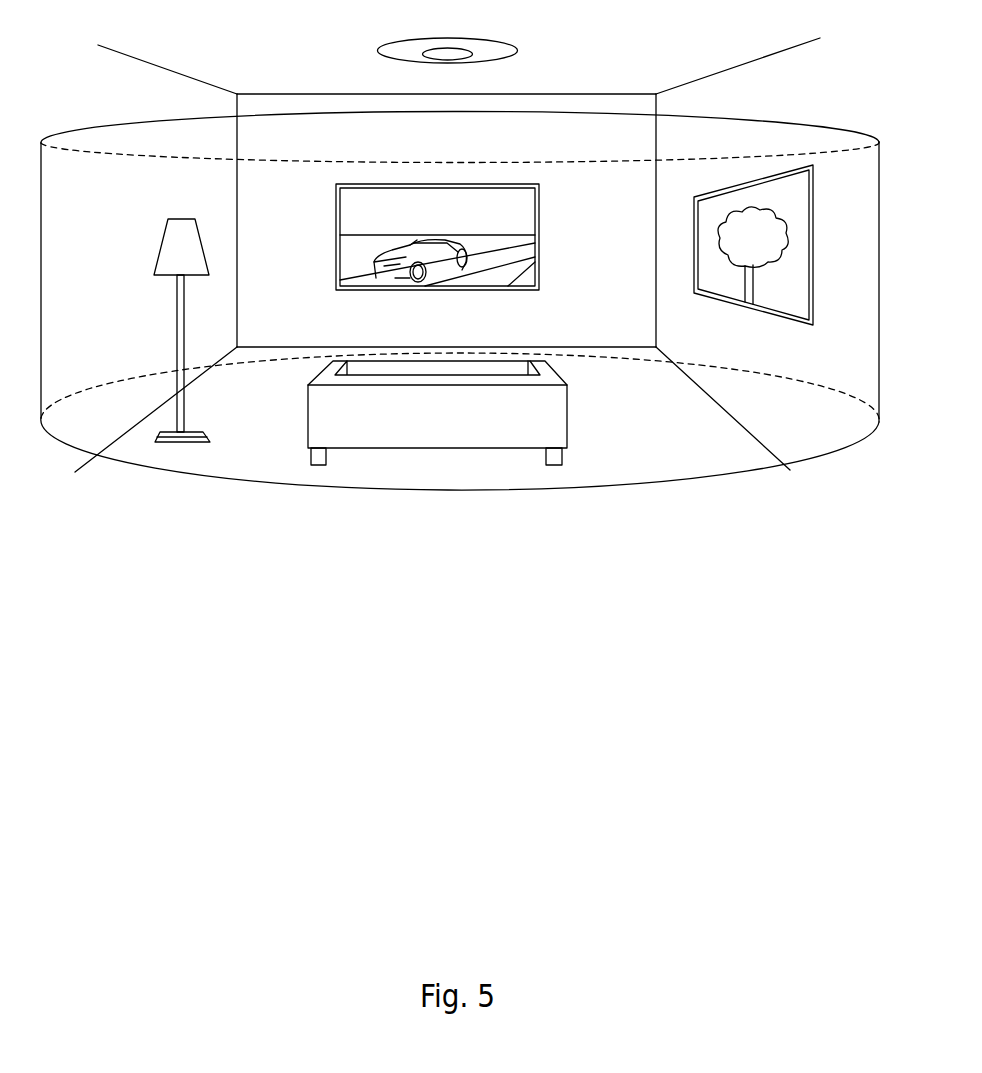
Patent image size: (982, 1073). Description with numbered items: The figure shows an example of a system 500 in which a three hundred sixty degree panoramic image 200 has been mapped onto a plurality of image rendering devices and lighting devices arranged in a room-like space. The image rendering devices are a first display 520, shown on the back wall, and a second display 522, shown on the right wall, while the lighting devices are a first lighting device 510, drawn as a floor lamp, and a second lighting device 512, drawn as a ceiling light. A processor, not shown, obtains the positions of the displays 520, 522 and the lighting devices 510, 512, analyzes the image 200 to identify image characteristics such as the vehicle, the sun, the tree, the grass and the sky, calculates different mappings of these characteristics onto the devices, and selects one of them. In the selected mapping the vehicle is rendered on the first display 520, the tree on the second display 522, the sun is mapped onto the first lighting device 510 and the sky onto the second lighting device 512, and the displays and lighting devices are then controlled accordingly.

The image 200 is at (830, 440).
The system 500 is at (447, 657).
The first lighting device 510 is at (188, 250).
The second lighting device 512 is at (400, 52).
The first display 520 is at (362, 216).
The second display 522 is at (785, 275).